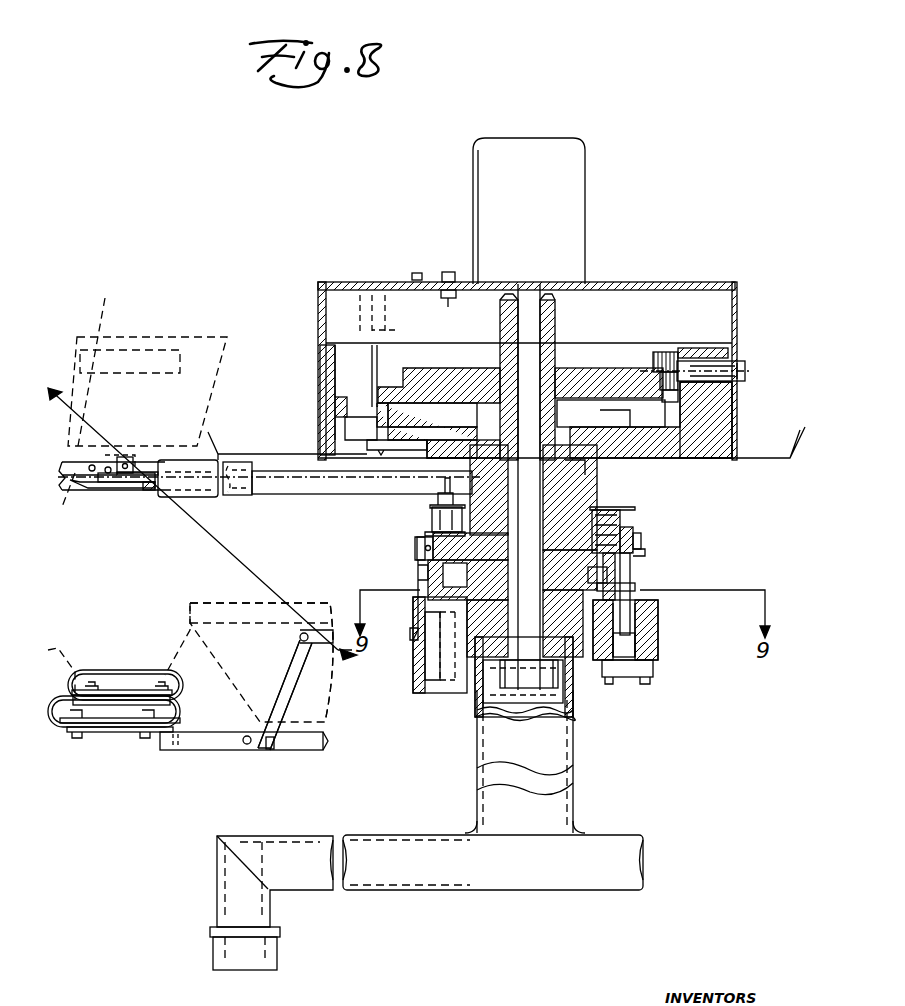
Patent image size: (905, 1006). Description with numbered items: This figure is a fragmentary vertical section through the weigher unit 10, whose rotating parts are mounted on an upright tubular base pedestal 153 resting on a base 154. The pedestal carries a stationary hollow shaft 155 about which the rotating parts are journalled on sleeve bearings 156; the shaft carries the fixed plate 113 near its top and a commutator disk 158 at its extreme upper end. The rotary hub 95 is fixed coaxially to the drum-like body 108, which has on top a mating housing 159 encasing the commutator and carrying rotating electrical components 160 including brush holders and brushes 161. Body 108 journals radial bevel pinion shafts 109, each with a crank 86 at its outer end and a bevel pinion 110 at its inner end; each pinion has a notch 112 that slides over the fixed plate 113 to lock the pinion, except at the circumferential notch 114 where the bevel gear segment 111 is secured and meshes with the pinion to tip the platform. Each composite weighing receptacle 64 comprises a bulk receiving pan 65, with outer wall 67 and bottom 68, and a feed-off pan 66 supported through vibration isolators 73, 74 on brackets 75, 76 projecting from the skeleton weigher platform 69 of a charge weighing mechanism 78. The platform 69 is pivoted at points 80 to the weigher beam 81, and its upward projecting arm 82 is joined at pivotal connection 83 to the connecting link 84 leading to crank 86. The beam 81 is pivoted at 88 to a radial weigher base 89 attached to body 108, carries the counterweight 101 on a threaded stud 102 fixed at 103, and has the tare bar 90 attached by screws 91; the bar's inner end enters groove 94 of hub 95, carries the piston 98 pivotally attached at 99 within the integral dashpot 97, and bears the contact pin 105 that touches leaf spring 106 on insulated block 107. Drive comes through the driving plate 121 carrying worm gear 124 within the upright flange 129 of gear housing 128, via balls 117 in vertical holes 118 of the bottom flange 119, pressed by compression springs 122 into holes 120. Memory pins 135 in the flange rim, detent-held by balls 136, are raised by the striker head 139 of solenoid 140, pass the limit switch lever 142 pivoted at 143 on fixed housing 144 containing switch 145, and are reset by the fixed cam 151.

The rotating electrical components 160 is at (440, 215).
The mating housing 159 is at (440, 270).
The brush holders and brushes 161 is at (440, 305).
The stationary hollow shaft 155 is at (560, 300).
The commutator disk 158 is at (600, 345).
The drum-like body 108 is at (330, 398).
The bevel gear segment 111 is at (380, 375).
The circumferential notch 114 is at (325, 350).
The insulated block 107 is at (377, 412).
The leaf spring 106 is at (350, 440).
The electrical contact pin 105 is at (367, 458).
The notch 112 is at (650, 375).
The bevel pinion 110 is at (668, 352).
The crank 86 is at (745, 364).
The bevel pinion shaft 109 is at (735, 400).
The sleeve bearings 156 is at (558, 416).
The fixed plate 113 is at (620, 390).
The groove 94 is at (595, 480).
The rotary hub 95 is at (597, 497).
The bottom flange 119 is at (600, 510).
The vertical hole 118 is at (625, 525).
The fixed cam 151 is at (621, 514).
The compression spring 122 is at (640, 530).
The memory pin 135 is at (642, 538).
The ball 136 is at (645, 553).
The ball 117 is at (616, 560).
The hole 120 is at (637, 572).
The striker head 139 is at (637, 588).
The upright flange 129 is at (634, 598).
The worm gear 124 is at (634, 615).
The solenoid 140 is at (660, 640).
The pivotal attachment 99 is at (445, 495).
The dashpot 97 is at (440, 518).
The piston 98 is at (428, 536).
The driving plate 121 is at (415, 563).
The limit switch lever 142 is at (418, 575).
The gear housing 128 is at (423, 600).
The pivot 143 is at (412, 632).
The switch 145 is at (425, 668).
The fixed housing 144 is at (415, 690).
The tare bar 90 is at (158, 500).
The counterweight 101 is at (230, 500).
The radial weigher base 89 is at (160, 460).
The pivots 88 is at (125, 457).
The bottom 68 is at (140, 455).
The screws 91 is at (70, 482).
The attachment point 103 is at (115, 490).
The threaded stud 102 is at (148, 490).
The weigher unit 10 is at (270, 523).
The composite weighing receptacle 64 is at (176, 337).
The bulk receiving pan 65 is at (130, 335).
The connecting link 84 is at (105, 310).
The feed-off pan 66 is at (66, 648).
The vibration isolator 73 is at (72, 688).
The vibration isolator 74 is at (52, 728).
The bracket 75 is at (120, 695).
The bracket 76 is at (95, 736).
The outer wall 67 is at (235, 690).
The skeleton weigher platform 69 is at (205, 752).
The pivot points 80 is at (247, 746).
The weigher beam 81 is at (290, 750).
The upward projecting arm 82 is at (300, 652).
The pivotal connection 83 is at (300, 637).
The charge weighing mechanism 78 is at (330, 755).
The tubular base pedestal 153 is at (573, 798).
The base 154 is at (378, 890).